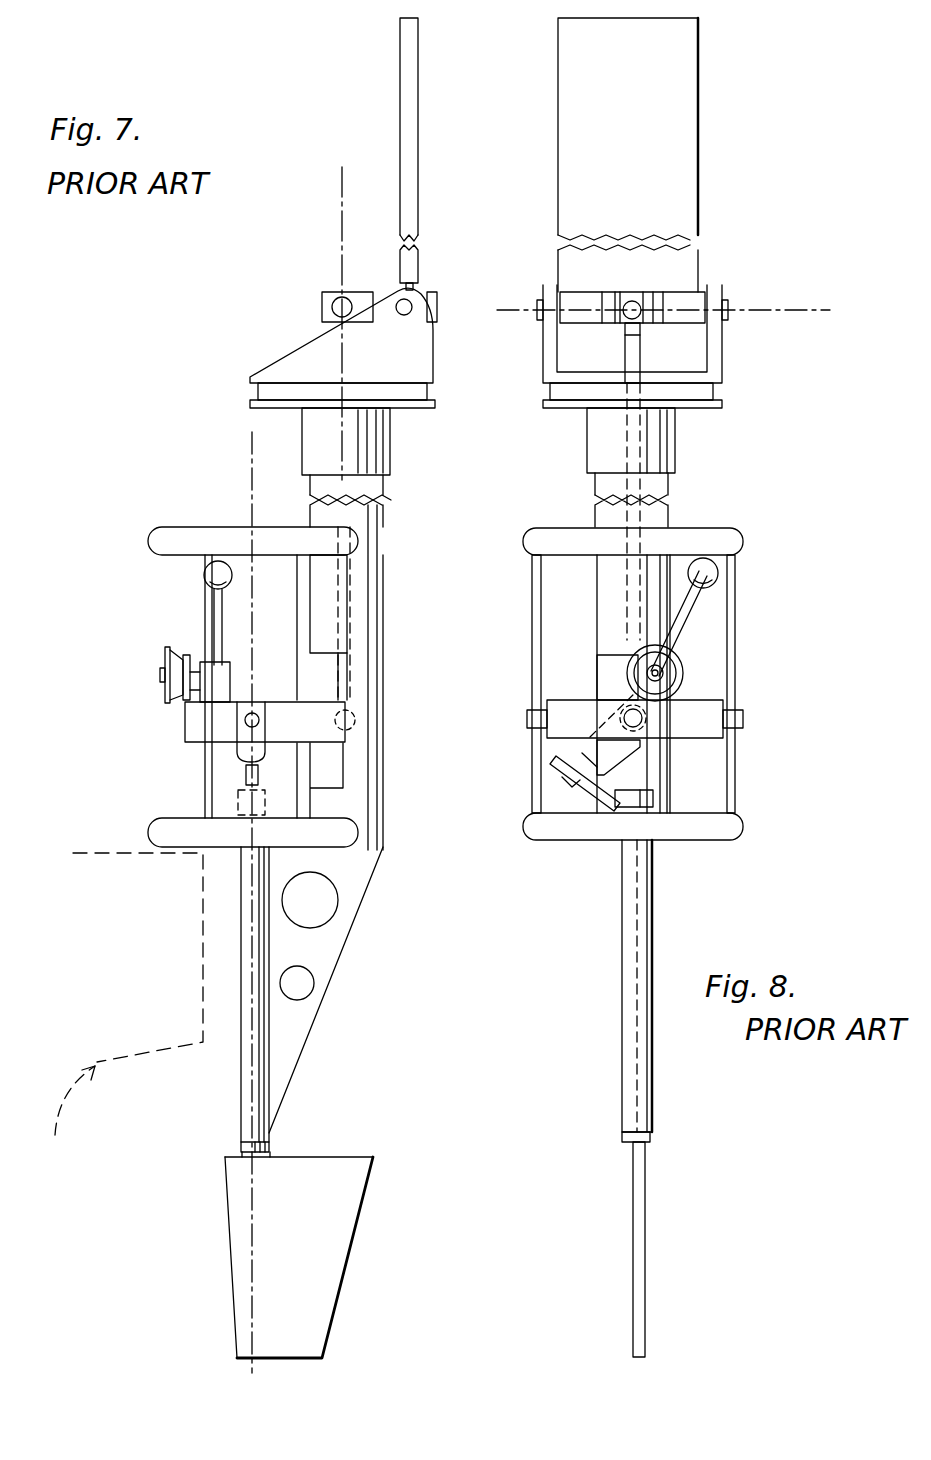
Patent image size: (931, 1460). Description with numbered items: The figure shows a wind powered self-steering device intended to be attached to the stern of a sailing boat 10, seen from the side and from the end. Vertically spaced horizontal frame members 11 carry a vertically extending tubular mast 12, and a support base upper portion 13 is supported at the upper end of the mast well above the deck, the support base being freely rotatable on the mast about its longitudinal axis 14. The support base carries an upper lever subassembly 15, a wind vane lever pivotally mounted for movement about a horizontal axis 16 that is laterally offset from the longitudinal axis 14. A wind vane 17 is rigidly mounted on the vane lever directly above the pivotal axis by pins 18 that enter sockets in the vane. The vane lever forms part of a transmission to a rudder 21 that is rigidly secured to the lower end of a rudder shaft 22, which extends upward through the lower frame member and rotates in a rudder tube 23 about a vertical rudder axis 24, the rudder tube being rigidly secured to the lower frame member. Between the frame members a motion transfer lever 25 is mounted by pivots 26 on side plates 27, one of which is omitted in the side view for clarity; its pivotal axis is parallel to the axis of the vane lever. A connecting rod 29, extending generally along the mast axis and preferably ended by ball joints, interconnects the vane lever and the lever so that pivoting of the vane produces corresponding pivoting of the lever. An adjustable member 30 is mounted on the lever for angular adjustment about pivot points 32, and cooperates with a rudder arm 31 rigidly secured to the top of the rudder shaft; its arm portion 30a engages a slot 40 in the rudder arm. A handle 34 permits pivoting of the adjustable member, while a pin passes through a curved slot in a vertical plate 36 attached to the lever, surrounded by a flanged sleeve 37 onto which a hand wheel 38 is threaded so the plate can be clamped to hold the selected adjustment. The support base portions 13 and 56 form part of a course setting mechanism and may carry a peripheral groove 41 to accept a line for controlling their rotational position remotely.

In FIG. 7, the sailing boat 10 is at (124, 1015).
In FIG. 7, the horizontal frame members 11 is at (160, 535).
In FIG. 8, the horizontal frame members 11 is at (745, 538).
In FIG. 7, the tubular mast 12 is at (385, 492).
In FIG. 8, the tubular mast 12 is at (672, 515).
In FIG. 7, the support base upper portion 13 is at (415, 352).
In FIG. 8, the support base upper portion 13 is at (722, 355).
In FIG. 7, the longitudinal axis 14 is at (340, 191).
In FIG. 7, the upper lever subassembly 15 is at (345, 289).
In FIG. 8, the upper lever subassembly 15 is at (695, 322).
In FIG. 8, the horizontal axis 16 is at (765, 300).
In FIG. 7, the wind vane 17 is at (418, 252).
In FIG. 8, the wind vane 17 is at (695, 268).
In FIG. 7, the pins 18 is at (412, 297).
In FIG. 8, the pins 18 is at (598, 295).
In FIG. 7, the rudder 21 is at (345, 1213).
In FIG. 8, the rudder 21 is at (635, 1268).
In FIG. 7, the rudder shaft 22 is at (241, 1146).
In FIG. 8, the rudder shaft 22 is at (648, 1142).
In FIG. 7, the rudder tube 23 is at (268, 1062).
In FIG. 8, the rudder tube 23 is at (652, 1060).
In FIG. 7, the rudder axis 24 is at (257, 1328).
In FIG. 7, the lever 25 is at (315, 742).
In FIG. 8, the lever 25 is at (580, 700).
In FIG. 7, the pivots 26 is at (248, 722).
In FIG. 8, the pivots 26 is at (530, 718).
In FIG. 8, the side plates 27 is at (738, 620).
In FIG. 7, the connecting rod 29 is at (345, 432).
In FIG. 8, the connecting rod 29 is at (628, 440).
In FIG. 8, the adjustable member 30 is at (622, 742).
In FIG. 8, the arm portion 30a is at (560, 780).
In FIG. 8, the rudder arm 31 is at (610, 812).
In FIG. 8, the pivot points 32 is at (655, 735).
In FIG. 7, the handle 34 is at (205, 575).
In FIG. 8, the handle 34 is at (718, 575).
In FIG. 7, the vertical plate 36 is at (185, 715).
In FIG. 8, the vertical plate 36 is at (597, 660).
In FIG. 7, the flanged sleeve 37 is at (212, 662).
In FIG. 7, the hand wheel 38 is at (165, 660).
In FIG. 8, the hand wheel 38 is at (685, 672).
In FIG. 7, the slot 40 is at (248, 775).
In FIG. 7, the peripheral groove 41 is at (258, 394).
In FIG. 8, the peripheral groove 41 is at (715, 393).
In FIG. 7, the support base portion 56 is at (392, 437).